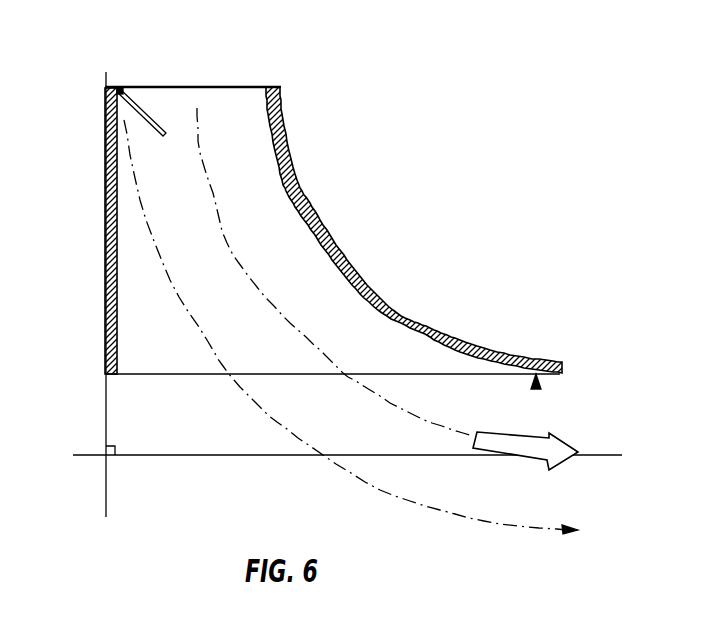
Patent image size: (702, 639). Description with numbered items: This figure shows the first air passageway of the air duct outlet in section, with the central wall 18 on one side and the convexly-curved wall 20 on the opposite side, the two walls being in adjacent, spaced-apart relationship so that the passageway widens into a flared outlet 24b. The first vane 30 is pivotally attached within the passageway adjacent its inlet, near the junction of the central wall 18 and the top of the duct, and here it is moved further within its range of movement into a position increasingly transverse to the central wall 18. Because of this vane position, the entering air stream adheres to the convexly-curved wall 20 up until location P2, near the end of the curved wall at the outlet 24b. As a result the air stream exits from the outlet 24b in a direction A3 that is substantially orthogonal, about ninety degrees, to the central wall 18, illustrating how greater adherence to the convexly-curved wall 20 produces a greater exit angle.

The central wall 18 is at (107, 223).
The convexly-curved wall 20 is at (305, 203).
The first vane 30 is at (156, 120).
The flared outlet 24b is at (497, 374).
The location P2 is at (536, 386).
The direction A3 is at (532, 462).